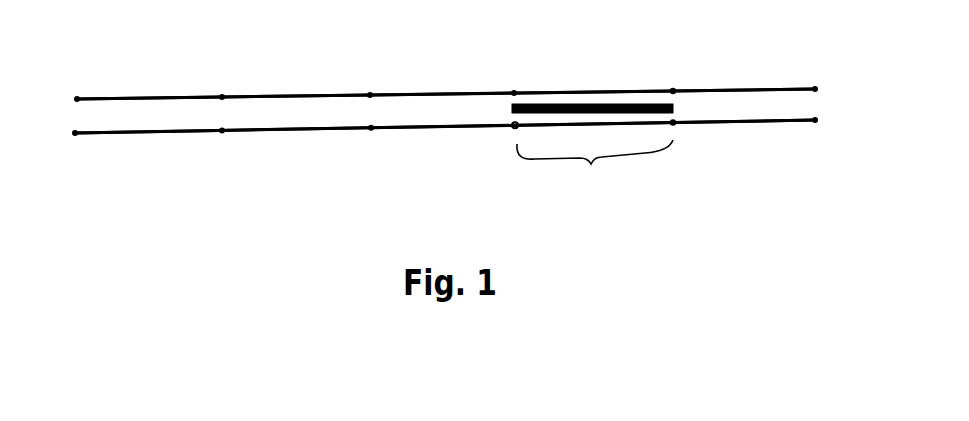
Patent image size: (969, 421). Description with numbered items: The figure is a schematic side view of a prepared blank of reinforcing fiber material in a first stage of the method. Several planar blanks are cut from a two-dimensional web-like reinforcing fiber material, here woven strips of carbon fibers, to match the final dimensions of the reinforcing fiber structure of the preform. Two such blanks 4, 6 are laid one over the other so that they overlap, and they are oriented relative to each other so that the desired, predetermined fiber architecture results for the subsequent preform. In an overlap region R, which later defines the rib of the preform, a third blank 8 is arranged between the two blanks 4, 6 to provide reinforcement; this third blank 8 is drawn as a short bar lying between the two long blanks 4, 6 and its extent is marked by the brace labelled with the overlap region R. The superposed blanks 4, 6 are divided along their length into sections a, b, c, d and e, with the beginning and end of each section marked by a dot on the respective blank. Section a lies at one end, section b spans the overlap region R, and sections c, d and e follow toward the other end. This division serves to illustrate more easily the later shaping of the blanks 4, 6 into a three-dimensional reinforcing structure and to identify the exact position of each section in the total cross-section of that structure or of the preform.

The blank 4 is at (777, 88).
The blank 6 is at (790, 124).
The third blank 8 is at (617, 107).
The section a is at (725, 80).
The section b is at (582, 92).
The section c is at (432, 93).
The section d is at (280, 93).
The section e is at (155, 93).
The overlap region R is at (595, 173).